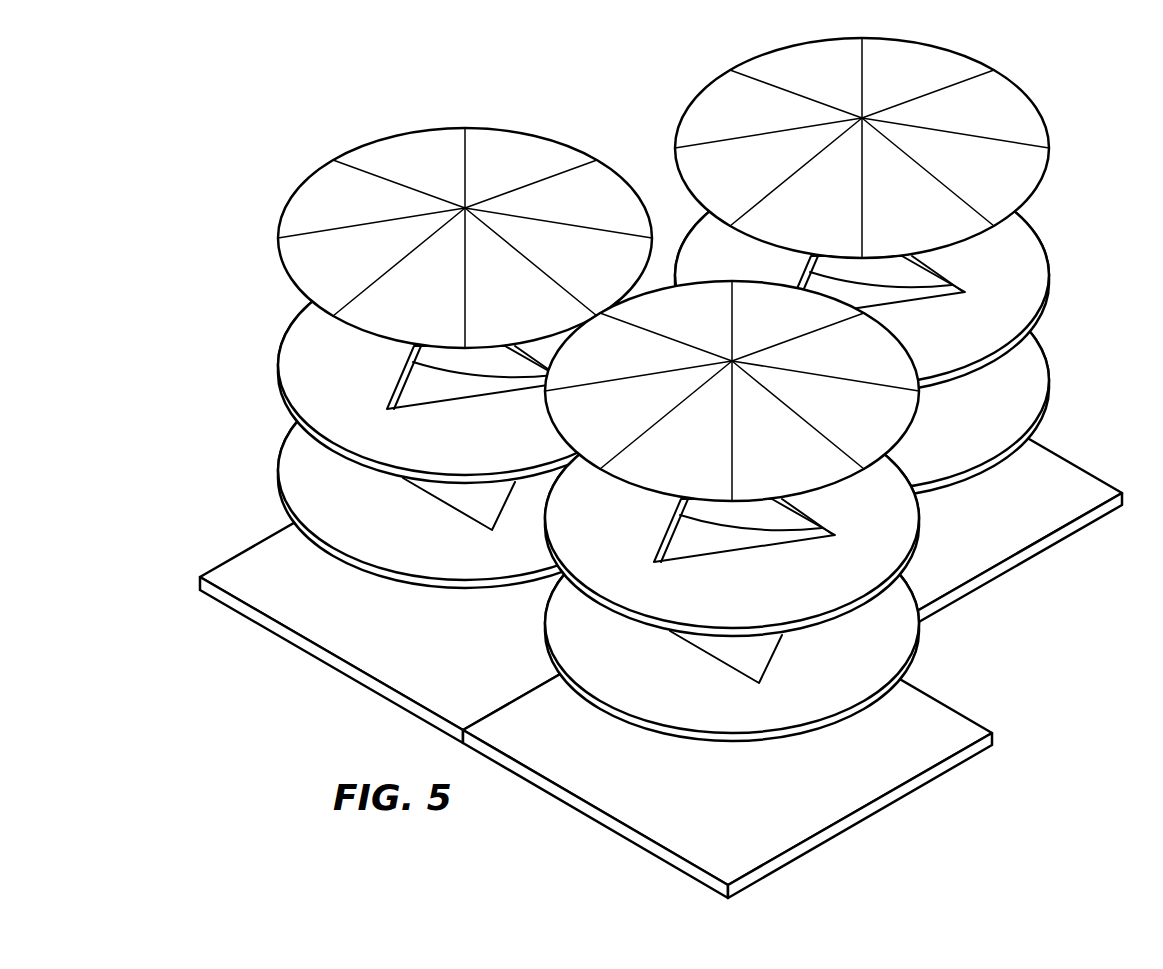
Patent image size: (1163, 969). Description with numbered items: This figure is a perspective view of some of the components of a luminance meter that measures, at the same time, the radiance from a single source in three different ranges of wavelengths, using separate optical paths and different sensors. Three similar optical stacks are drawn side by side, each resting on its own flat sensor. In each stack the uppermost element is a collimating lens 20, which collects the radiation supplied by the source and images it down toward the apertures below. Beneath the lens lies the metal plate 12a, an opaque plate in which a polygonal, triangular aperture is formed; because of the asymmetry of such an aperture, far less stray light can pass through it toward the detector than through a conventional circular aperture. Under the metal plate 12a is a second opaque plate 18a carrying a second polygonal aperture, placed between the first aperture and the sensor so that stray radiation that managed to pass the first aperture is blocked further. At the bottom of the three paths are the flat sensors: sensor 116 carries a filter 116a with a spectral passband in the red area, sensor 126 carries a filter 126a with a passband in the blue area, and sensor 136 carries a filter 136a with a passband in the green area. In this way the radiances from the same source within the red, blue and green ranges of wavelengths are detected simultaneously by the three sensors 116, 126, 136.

The collimating lens 20 is at (312, 190).
The metal plate 12a is at (298, 347).
The opaque plate 18a is at (296, 455).
The sensor 116 is at (463, 584).
The filter 116a is at (333, 676).
The sensor 126 is at (747, 738).
The filter 126a is at (918, 755).
The sensor 136 is at (870, 498).
The filter 136a is at (1053, 463).